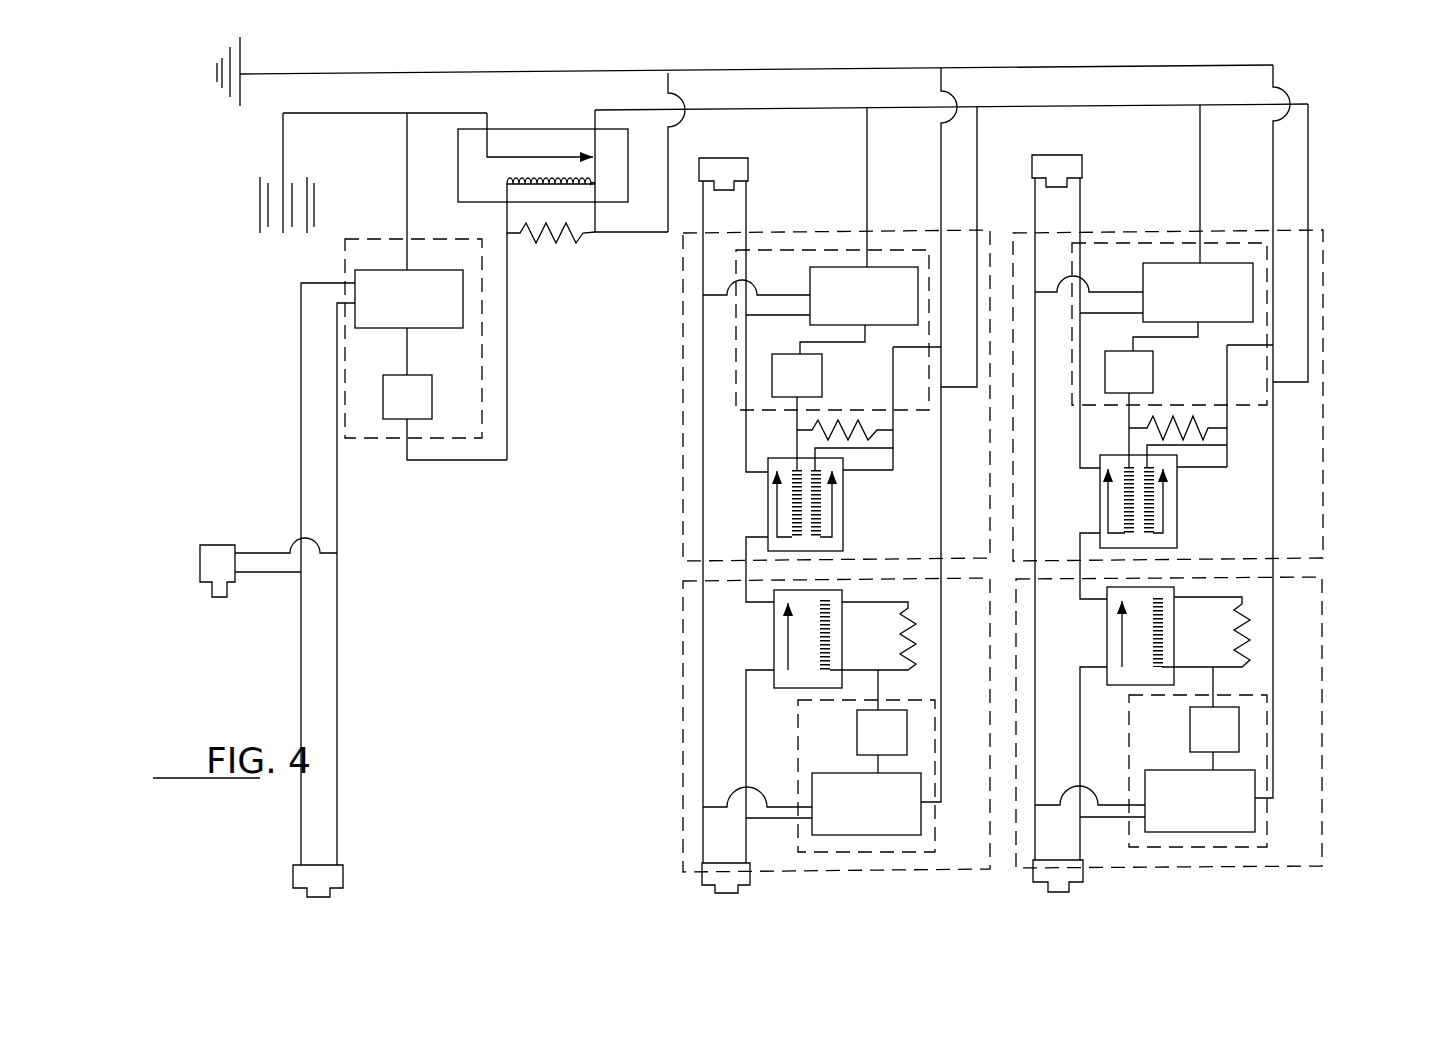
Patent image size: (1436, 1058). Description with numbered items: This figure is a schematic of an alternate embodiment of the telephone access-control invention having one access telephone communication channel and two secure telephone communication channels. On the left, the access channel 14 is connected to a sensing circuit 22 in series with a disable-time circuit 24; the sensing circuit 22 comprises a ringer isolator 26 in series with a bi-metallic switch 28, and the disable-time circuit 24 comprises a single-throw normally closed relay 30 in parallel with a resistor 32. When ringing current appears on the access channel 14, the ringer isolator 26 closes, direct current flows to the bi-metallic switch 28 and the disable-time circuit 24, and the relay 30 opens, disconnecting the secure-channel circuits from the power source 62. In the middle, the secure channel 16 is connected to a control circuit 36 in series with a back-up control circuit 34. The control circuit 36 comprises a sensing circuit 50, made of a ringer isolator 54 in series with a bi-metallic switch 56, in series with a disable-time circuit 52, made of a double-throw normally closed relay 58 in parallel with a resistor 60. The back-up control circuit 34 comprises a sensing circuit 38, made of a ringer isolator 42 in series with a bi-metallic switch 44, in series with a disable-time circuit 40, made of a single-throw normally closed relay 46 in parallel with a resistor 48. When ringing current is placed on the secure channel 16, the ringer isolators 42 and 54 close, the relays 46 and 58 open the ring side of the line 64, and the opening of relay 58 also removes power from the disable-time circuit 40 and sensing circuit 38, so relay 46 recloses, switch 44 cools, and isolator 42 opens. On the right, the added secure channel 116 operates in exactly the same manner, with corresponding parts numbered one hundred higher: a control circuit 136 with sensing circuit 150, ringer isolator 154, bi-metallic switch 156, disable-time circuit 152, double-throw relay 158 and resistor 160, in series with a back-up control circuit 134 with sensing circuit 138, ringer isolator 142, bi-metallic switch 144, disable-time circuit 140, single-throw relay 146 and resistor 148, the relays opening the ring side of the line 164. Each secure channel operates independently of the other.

The access channel 14 is at (299, 490).
The secure channel 16 is at (701, 520).
The sensing circuit 22 is at (327, 275).
The disable-time circuit 24 is at (603, 170).
The ringer isolator 26 is at (353, 302).
The bi-metallic switch 28 is at (383, 404).
The single-throw normally closed relay 30 is at (470, 129).
The resistor 32 is at (540, 222).
The back-up control circuit 34 is at (681, 606).
The control circuit 36 is at (681, 298).
The sensing circuit 38 is at (762, 781).
The disable-time circuit 40 is at (819, 663).
The ringer isolator 42 is at (812, 832).
The bi-metallic switch 44 is at (857, 737).
The single-throw normally closed relay 46 is at (697, 639).
The resistor 48 is at (909, 638).
The sensing circuit 50 is at (761, 259).
The disable-time circuit 52 is at (763, 504).
The ringer isolator 54 is at (840, 267).
The bi-metallic switch 56 is at (772, 382).
The double-throw normally closed relay 58 is at (767, 493).
The resistor 60 is at (797, 424).
The power source 62 is at (259, 207).
The ring side of the line 64 is at (748, 546).
The secure channel 116 is at (1041, 208).
The back-up control circuit 134 is at (1324, 800).
The control circuit 136 is at (1325, 232).
The sensing circuit 138 is at (1278, 771).
The disable-time circuit 140 is at (1179, 682).
The ringer isolator 142 is at (1257, 822).
The bi-metallic switch 144 is at (1240, 720).
The single-throw normally closed relay 146 is at (1267, 613).
The resistor 148 is at (1241, 613).
The sensing circuit 150 is at (1249, 255).
The disable-time circuit 152 is at (1179, 487).
The ringer isolator 154 is at (1253, 295).
The bi-metallic switch 156 is at (1155, 382).
The double-throw normally closed relay 158 is at (1177, 501).
The resistor 160 is at (1199, 420).
The ring side of the line 164 is at (1080, 223).